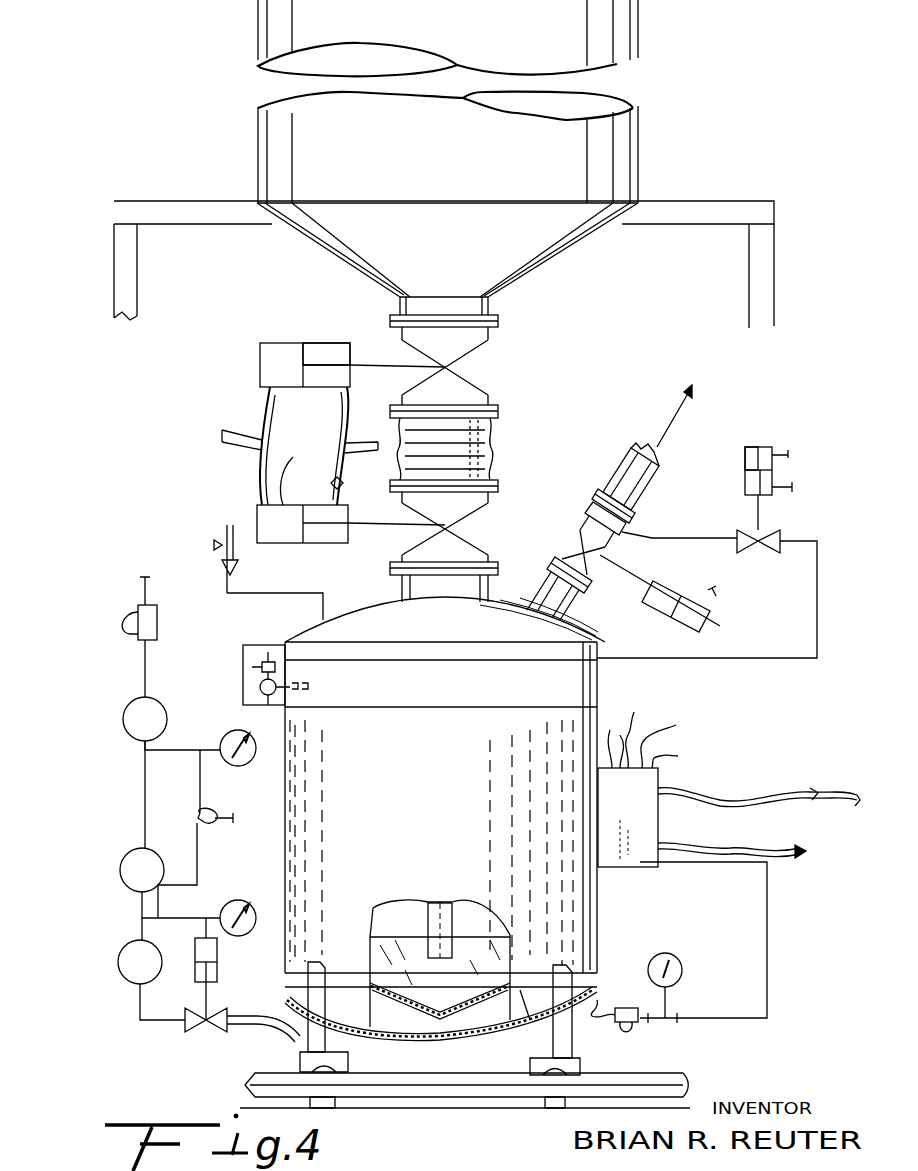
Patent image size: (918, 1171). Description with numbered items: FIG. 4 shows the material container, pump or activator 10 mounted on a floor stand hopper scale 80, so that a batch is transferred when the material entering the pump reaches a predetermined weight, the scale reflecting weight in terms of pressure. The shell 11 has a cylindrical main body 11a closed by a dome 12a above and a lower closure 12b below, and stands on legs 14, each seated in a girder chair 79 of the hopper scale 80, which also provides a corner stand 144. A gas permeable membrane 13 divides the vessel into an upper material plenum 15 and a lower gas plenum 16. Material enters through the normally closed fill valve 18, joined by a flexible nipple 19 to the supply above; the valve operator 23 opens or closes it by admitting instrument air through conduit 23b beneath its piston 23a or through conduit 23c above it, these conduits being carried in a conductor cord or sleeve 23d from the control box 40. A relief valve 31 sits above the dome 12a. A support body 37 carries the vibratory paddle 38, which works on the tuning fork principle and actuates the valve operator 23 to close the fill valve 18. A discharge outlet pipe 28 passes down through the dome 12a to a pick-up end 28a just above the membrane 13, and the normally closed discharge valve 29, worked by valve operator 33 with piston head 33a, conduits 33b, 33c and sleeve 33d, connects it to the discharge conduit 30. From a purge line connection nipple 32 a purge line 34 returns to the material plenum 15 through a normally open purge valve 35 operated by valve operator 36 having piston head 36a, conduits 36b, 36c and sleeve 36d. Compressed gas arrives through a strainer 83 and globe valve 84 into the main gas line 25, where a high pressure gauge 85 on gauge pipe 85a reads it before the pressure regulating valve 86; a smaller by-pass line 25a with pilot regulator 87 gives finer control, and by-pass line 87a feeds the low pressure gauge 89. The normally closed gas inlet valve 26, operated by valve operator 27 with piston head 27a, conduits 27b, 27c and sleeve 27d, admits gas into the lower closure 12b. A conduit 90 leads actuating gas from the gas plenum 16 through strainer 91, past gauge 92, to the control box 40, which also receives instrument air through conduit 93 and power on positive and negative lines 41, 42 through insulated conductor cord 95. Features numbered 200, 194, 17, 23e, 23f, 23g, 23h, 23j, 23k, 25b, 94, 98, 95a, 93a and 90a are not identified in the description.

The hopper 200 is at (474, 195).
The support shelf 194 is at (728, 212).
The valve operator 23 is at (252, 515).
The piston 23a is at (289, 470).
The conduit 23b is at (340, 480).
The conduit 23c is at (268, 482).
The conductor cord or sleeve 23d is at (258, 372).
The valve housing section 23e is at (306, 352).
The flexible sleeve 23f is at (265, 415).
The flexible sleeve wall 23g is at (344, 420).
The pressure port 23h is at (360, 442).
The pressure port 23j is at (222, 432).
The valve orifice 23k is at (344, 488).
The flexible nipple 19 is at (495, 462).
The fill valve 18 is at (470, 540).
The inlet neck 17 is at (490, 585).
The dome 12a is at (368, 598).
The lower closure 12b is at (527, 1025).
The relief valve 31 is at (226, 585).
The discharge conduit 30 is at (633, 455).
The purge line connection nipple 32 is at (600, 505).
The discharge valve 29 is at (574, 548).
The discharge outlet pipe 28 is at (570, 610).
The pick-up end 28a is at (406, 902).
The valve operator 36 is at (778, 476).
The piston head 36a is at (752, 468).
The conduit 36b is at (792, 487).
The conduit 36c is at (788, 450).
The conductor cord or sleeve 36d is at (677, 737).
The purge valve 35 is at (780, 532).
The purge line 34 is at (812, 662).
The valve operator 33 is at (680, 624).
The piston head 33a is at (706, 618).
The conduit 33b is at (670, 572).
The conduit 33c is at (718, 596).
The conductor cord or sleeve 33d is at (647, 730).
The material container, pump or activator 10 is at (632, 671).
The shell 11 is at (612, 888).
The cylindrical main body 11a is at (597, 916).
The strainer 83 is at (135, 610).
The globe valve 84 is at (130, 708).
The compressed gas conduit 25 is at (148, 685).
The by-pass line 25a is at (200, 860).
The supply conduit 25b is at (288, 1040).
The high pressure gauge 85 is at (244, 766).
The gauge pipe 85a is at (190, 748).
The valve 98 is at (268, 660).
The support body 37 is at (268, 698).
The vibratory paddle 38 is at (312, 682).
The pressure regulating valve 86 is at (128, 850).
The pilot regulating valve 87 is at (206, 813).
The by-pass line 87a is at (160, 912).
The low pressure gauge 89 is at (250, 902).
The valve operator 27 is at (192, 970).
The piston head 27a is at (200, 940).
The conduit 27b is at (220, 980).
The conduit 27c is at (220, 948).
The conductor cord or sleeve 27d is at (682, 757).
The valve 94 is at (130, 985).
The gas inlet valve 26 is at (182, 1030).
The legs 14 is at (308, 1010).
The gas permeable membrane 13 is at (400, 1032).
The girder chair 79 is at (348, 1070).
The gas plenum 16 is at (492, 1022).
The hopper scale 80 is at (615, 1070).
The corner stand 144 is at (522, 1106).
The material plenum 15 is at (474, 931).
The control box 40 is at (630, 816).
The insulated conductor cord 95 is at (670, 792).
The cable 95a is at (735, 792).
The conduit 93 is at (680, 841).
The cable 93a is at (770, 848).
The positive line 41 is at (812, 790).
The negative line 42 is at (858, 796).
The conduit 90 is at (767, 925).
The conduit 90a is at (604, 1003).
The strainer 91 is at (627, 1005).
The gauge 92 is at (683, 968).